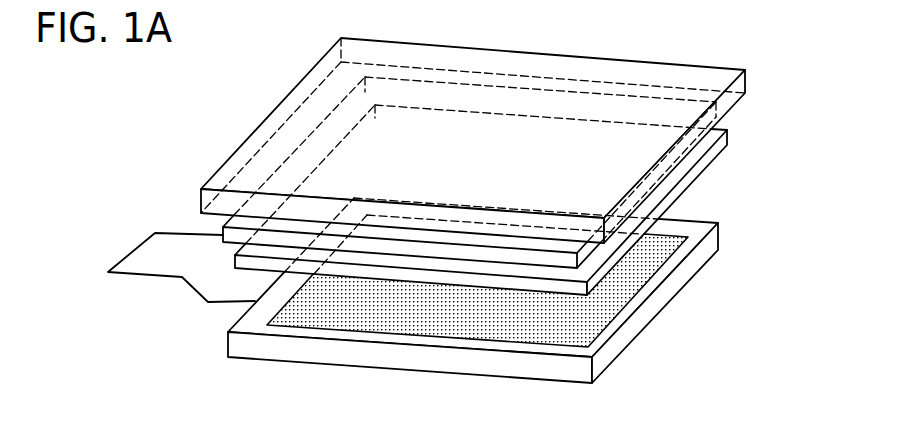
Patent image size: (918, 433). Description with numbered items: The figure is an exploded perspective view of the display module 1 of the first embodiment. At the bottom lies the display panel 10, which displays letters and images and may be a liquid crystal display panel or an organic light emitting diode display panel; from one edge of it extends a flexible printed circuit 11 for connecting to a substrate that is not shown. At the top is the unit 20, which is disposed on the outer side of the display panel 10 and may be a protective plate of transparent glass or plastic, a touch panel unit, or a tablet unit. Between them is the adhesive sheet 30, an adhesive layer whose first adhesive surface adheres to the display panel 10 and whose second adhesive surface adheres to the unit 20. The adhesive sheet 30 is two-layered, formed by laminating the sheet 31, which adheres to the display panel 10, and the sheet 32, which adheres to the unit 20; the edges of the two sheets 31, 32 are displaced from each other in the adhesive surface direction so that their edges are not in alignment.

The display module 1 is at (208, 90).
The display panel 10 is at (620, 345).
The flexible printed circuit 11 is at (178, 248).
The unit 20 is at (712, 73).
The adhesive sheet 30 is at (525, 212).
The sheet 31 is at (592, 283).
The sheet 32 is at (583, 253).